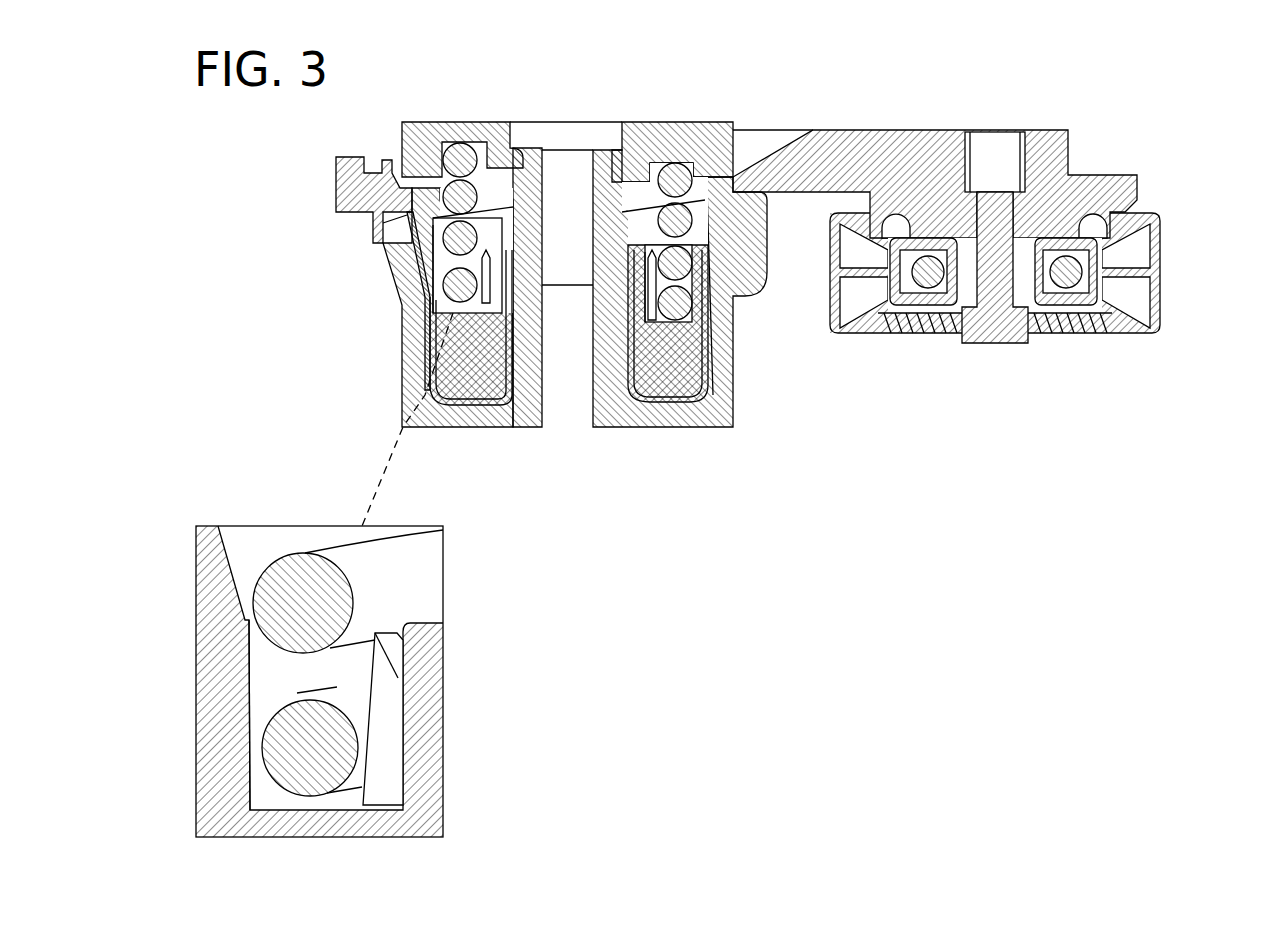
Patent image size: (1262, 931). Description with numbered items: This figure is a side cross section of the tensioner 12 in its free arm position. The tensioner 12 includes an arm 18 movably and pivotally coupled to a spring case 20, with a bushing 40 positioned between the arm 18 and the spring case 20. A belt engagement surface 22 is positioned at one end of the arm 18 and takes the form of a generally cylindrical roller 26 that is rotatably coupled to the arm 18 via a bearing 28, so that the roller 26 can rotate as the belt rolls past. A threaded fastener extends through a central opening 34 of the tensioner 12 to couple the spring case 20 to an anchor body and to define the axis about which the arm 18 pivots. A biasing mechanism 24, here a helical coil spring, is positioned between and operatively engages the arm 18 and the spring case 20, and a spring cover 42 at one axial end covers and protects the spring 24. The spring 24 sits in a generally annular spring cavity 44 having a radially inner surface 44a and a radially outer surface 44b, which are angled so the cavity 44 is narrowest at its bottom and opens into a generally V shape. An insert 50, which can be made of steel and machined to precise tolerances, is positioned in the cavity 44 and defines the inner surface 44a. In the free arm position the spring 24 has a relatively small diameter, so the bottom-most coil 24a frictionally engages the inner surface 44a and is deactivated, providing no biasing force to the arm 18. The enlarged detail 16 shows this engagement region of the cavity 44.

The tensioner 12 is at (745, 78).
The detail region of one-way clutch 16 is at (443, 705).
The arm 18 is at (1050, 134).
The spring case 20 is at (712, 420).
The belt engagement surface 22 is at (1022, 309).
The biasing mechanism 24 is at (676, 178).
The bottom-most coil 24a is at (678, 312).
The roller 26 is at (1162, 265).
The bearing 28 is at (930, 284).
The central opening 34 is at (580, 413).
The bushing 40 is at (420, 288).
The spring cover 42 is at (648, 130).
The spring cavity 44 is at (690, 284).
The radially inner surface 44a is at (672, 305).
The radially outer surface 44b is at (684, 300).
The insert 50 is at (650, 300).